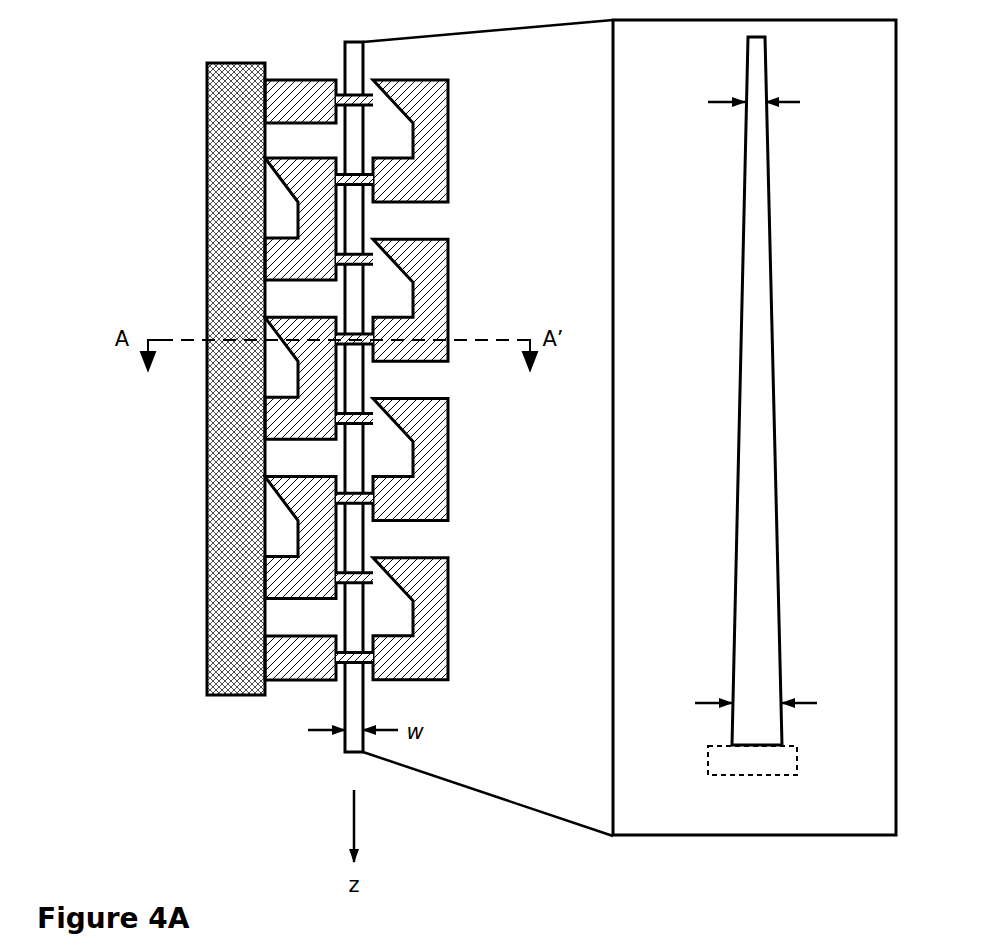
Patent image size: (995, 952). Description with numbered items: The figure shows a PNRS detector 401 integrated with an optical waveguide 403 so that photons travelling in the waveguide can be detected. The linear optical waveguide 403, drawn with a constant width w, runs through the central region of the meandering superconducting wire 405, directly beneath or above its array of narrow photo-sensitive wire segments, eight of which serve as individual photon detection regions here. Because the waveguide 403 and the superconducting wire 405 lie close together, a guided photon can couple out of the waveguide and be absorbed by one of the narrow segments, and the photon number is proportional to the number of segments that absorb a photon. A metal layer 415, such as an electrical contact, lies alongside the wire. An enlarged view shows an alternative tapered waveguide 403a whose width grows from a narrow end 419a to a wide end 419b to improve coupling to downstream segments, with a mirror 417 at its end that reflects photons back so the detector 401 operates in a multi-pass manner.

The PNRS detector 401 is at (455, 91).
The optical waveguide 403 is at (350, 60).
The tapered waveguide 403a is at (758, 87).
The superconducting wire 405 is at (432, 278).
The metal layer 415 is at (222, 165).
The mirror 417 is at (752, 760).
The narrow end 419a is at (782, 103).
The wide end 419b is at (782, 704).